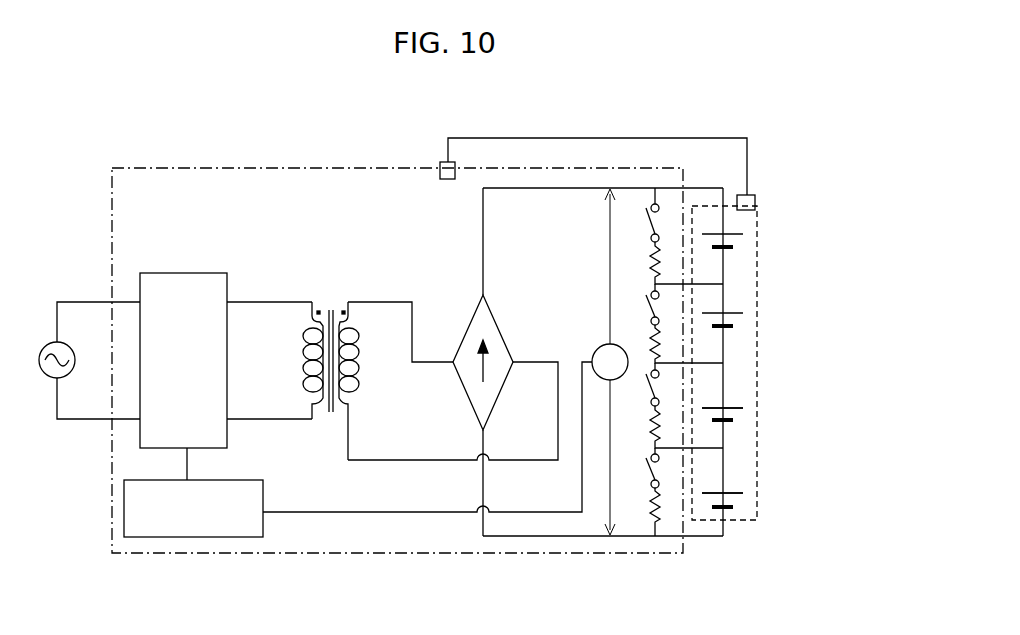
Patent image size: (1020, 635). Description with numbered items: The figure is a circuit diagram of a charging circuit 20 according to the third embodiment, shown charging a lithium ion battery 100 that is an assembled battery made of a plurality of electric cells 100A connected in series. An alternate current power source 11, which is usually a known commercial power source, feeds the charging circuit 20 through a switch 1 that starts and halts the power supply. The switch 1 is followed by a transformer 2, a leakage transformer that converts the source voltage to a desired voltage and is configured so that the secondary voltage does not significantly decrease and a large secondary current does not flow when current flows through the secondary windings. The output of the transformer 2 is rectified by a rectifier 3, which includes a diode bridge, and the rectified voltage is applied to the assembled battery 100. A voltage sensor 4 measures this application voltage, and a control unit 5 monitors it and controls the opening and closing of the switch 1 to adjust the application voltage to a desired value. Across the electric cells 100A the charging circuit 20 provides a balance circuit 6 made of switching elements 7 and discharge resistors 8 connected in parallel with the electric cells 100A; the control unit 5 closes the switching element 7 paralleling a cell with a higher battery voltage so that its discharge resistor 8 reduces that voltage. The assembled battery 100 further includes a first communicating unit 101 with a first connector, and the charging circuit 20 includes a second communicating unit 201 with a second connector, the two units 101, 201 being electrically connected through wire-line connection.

The switch 1 is at (175, 273).
The transformer 2 is at (331, 308).
The rectifier 3 is at (494, 320).
The voltage sensor 4 is at (600, 348).
The control unit 5 is at (238, 480).
The balance circuit 6 is at (660, 172).
The switching element 7 is at (648, 464).
The discharge resistor 8 is at (655, 522).
The alternate current power source 11 is at (45, 343).
The charging circuit 20 is at (112, 475).
The lithium ion battery 100 is at (757, 295).
The electric cell 100A is at (731, 493).
The first communicating unit 101 is at (755, 195).
The second communicating unit 201 is at (440, 165).